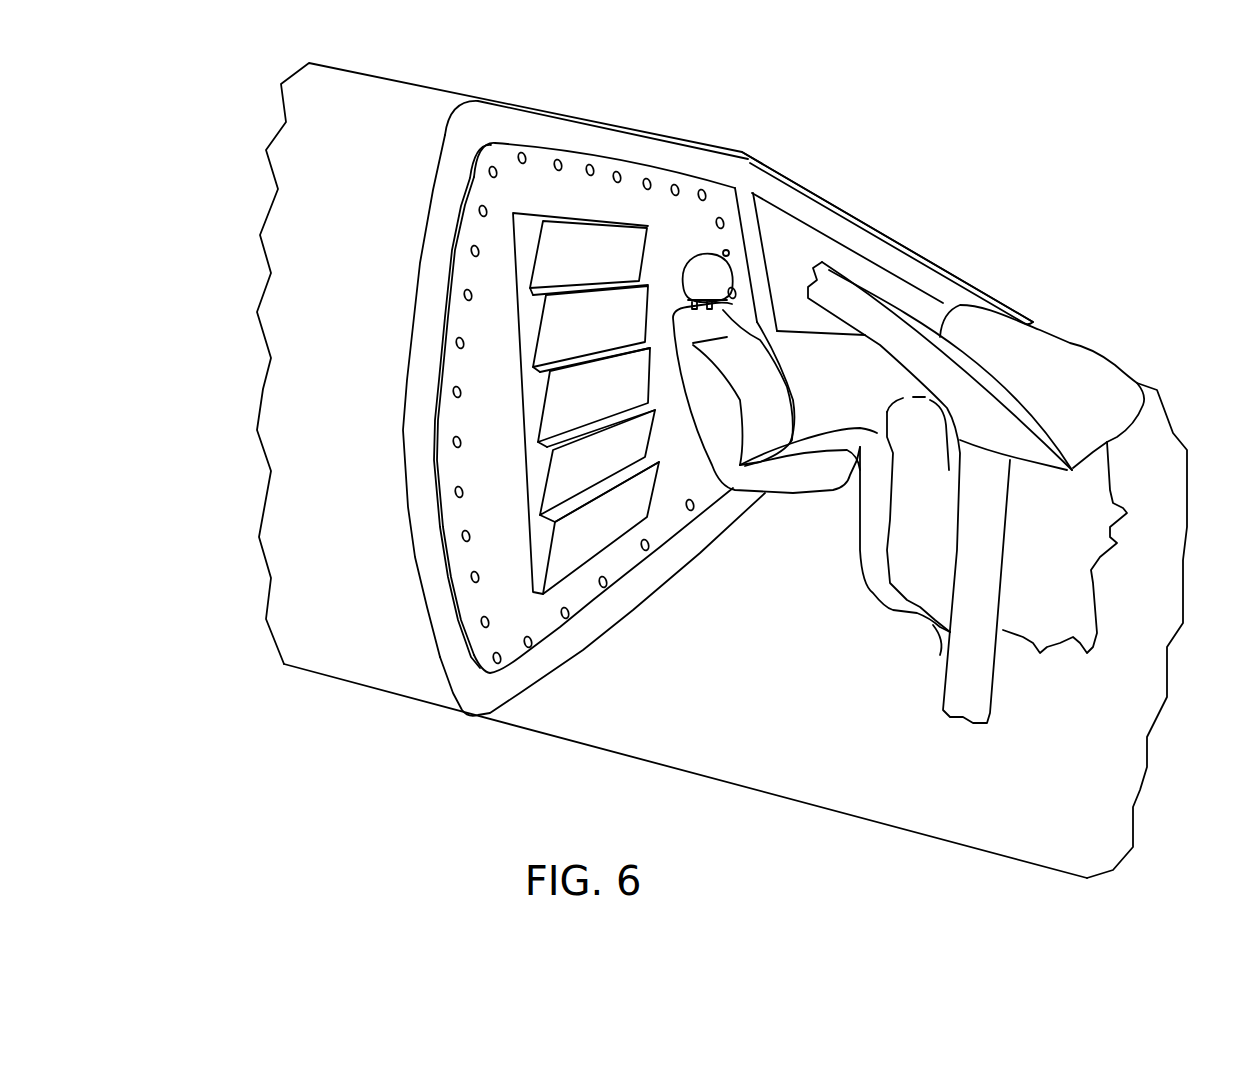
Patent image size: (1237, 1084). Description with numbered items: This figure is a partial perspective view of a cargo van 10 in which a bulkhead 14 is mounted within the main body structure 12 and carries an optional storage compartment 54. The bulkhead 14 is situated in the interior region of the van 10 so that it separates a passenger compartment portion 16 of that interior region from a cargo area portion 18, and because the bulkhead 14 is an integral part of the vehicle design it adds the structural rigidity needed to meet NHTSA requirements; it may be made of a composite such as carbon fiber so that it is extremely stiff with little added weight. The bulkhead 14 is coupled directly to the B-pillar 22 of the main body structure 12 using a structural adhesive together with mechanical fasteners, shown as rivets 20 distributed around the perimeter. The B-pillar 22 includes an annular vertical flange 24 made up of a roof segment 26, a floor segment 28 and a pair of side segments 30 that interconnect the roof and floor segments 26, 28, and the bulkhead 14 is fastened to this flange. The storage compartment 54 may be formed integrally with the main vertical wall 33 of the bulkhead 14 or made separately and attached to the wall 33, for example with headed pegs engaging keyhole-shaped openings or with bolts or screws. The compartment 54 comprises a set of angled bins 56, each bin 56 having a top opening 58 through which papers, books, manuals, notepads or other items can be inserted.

The cargo van 10 is at (958, 196).
The main body structure 12 is at (882, 356).
The bulkhead 14 is at (534, 352).
The passenger compartment portion 16 is at (605, 730).
The cargo area portion 18 is at (260, 374).
The rivets 20 is at (705, 191).
The B-pillar 22 is at (470, 130).
The annular vertical flange 24 is at (552, 394).
The roof segment 26 is at (585, 126).
The floor segment 28 is at (698, 535).
The side segments 30 is at (410, 390).
The main vertical wall 33 is at (534, 407).
The storage compartment 54 is at (508, 267).
The angled bins 56 is at (628, 257).
The top opening 58 is at (575, 357).